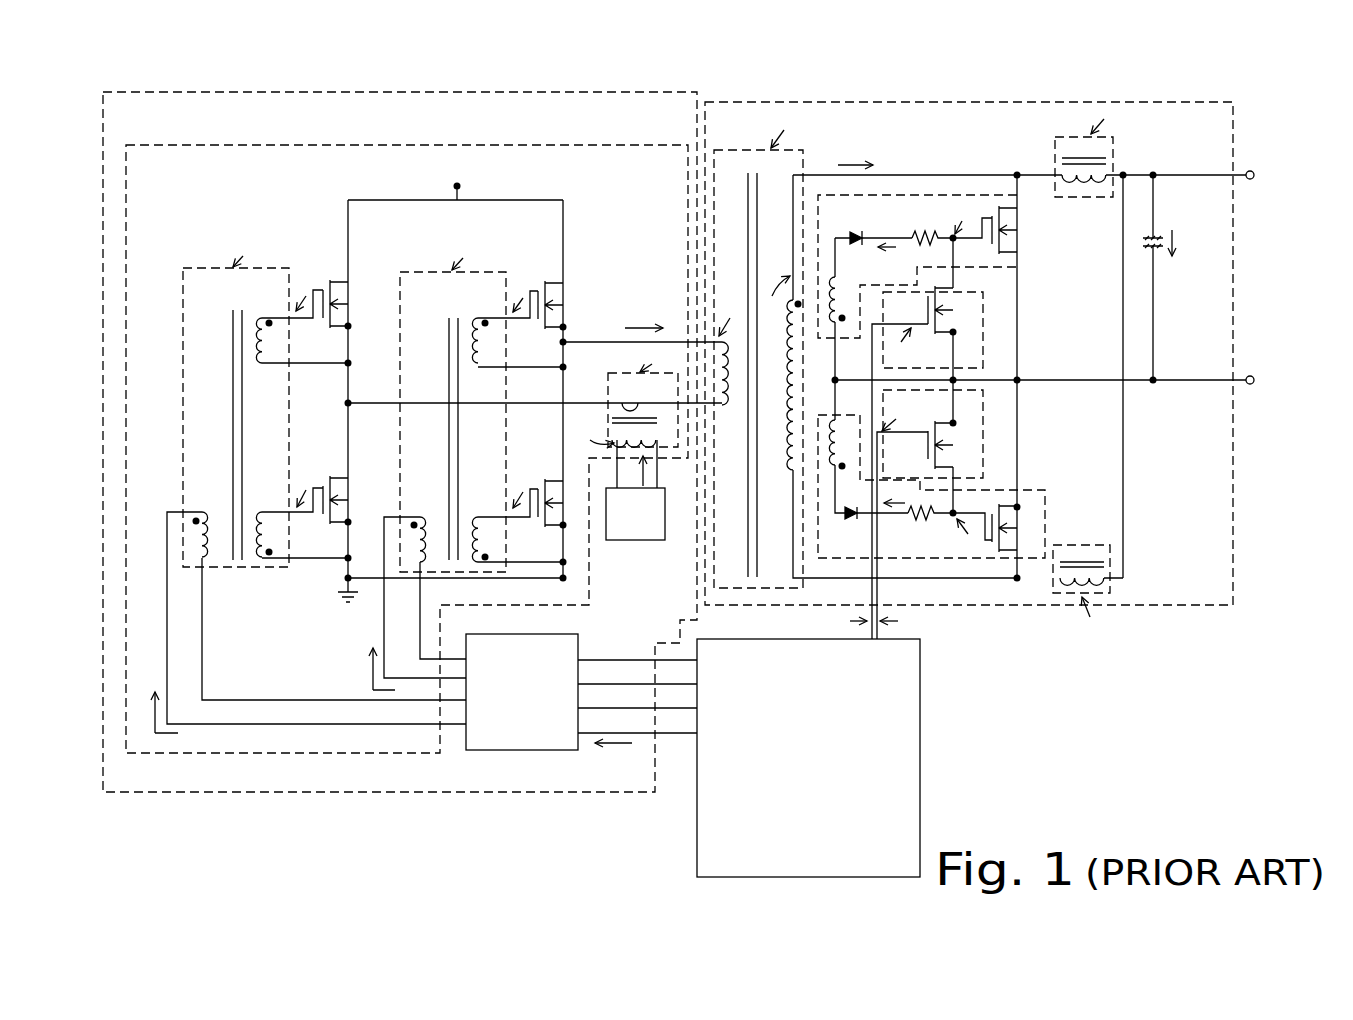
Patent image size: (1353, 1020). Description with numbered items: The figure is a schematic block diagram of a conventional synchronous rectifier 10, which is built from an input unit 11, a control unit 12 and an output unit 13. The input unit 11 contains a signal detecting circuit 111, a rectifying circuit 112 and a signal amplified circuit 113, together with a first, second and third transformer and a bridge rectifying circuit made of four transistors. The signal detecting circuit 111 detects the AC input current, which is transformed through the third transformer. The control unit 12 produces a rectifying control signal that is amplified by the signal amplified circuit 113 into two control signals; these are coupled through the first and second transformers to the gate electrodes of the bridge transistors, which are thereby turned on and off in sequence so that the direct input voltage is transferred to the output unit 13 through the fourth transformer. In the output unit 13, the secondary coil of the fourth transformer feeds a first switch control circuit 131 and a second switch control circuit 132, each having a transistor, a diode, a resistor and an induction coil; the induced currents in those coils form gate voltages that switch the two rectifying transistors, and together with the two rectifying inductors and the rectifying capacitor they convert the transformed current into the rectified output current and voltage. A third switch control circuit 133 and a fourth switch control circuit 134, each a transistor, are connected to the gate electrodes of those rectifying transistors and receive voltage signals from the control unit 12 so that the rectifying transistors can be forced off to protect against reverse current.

The synchronous rectifier 10 is at (1222, 64).
The input unit 11 is at (375, 91).
The control unit 12 is at (895, 682).
The output unit 13 is at (1062, 82).
The signal detecting circuit 111 is at (648, 545).
The rectifying circuit 112 is at (196, 144).
The signal amplified circuit 113 is at (581, 692).
The first switch control circuit 131 is at (887, 200).
The second switch control circuit 132 is at (1040, 506).
The third switch control circuit 133 is at (975, 293).
The fourth switch control circuit 134 is at (970, 410).